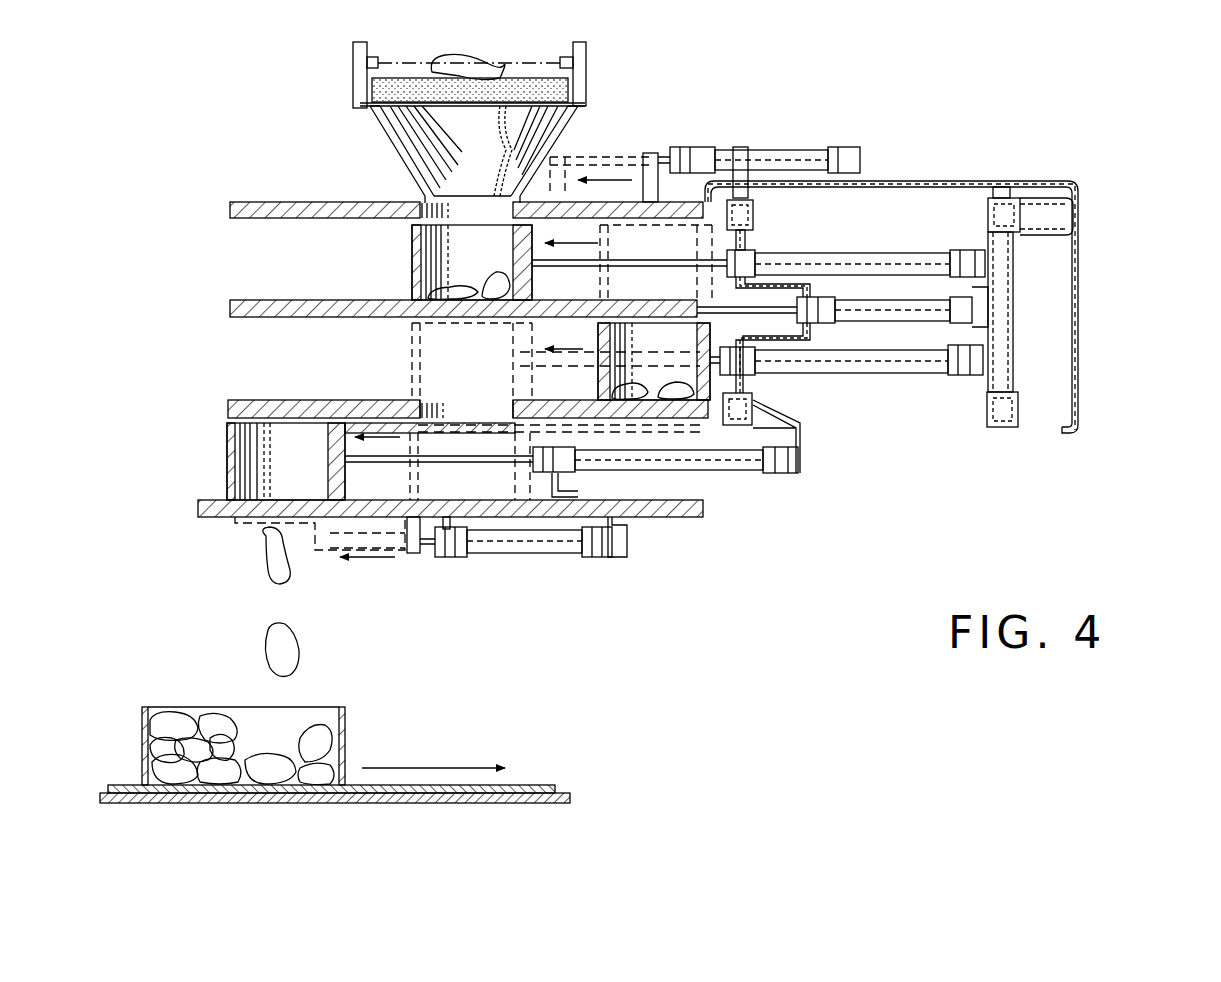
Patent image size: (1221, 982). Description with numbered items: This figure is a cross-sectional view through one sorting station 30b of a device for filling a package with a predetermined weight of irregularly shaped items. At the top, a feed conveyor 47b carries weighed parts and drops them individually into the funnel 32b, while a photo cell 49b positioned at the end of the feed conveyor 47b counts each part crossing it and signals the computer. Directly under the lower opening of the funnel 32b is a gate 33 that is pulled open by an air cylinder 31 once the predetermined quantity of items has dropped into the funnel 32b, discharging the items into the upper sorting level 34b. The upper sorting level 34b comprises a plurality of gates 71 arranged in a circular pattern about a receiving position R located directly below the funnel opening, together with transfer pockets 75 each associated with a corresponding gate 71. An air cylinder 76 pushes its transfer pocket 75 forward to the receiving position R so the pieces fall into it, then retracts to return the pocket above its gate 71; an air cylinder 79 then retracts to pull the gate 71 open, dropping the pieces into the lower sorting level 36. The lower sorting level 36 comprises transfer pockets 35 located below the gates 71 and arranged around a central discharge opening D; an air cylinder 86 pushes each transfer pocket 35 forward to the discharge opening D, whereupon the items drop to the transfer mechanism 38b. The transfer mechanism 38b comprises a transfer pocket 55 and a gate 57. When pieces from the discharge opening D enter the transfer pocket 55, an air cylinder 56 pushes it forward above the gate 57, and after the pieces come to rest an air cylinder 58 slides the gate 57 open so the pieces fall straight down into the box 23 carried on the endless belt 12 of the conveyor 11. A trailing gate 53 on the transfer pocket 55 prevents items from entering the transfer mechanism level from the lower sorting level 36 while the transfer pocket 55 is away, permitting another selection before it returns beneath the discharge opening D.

The conveyor 11 is at (540, 803).
The endless belt 12 is at (540, 785).
The box 23 is at (345, 735).
The sorting station 30b is at (656, 558).
The air cylinder 31 is at (788, 155).
The funnel 32b is at (402, 156).
The gate 33 is at (612, 188).
The upper sorting level 34b is at (300, 270).
The transfer pocket 35 is at (598, 380).
The lower sorting level 36 is at (300, 372).
The transfer mechanism 38b is at (212, 429).
The feed conveyor 47b is at (560, 85).
The photo cell 49b is at (353, 58).
The trailing gate 53 is at (462, 418).
The transfer pocket 55 is at (228, 472).
The air cylinder 56 is at (705, 462).
The gate 57 is at (372, 518).
The air cylinder 58 is at (522, 553).
The gate 71 is at (625, 300).
The transfer pocket 75 is at (414, 272).
The air cylinder 76 is at (850, 250).
The air cylinder 79 is at (910, 308).
The air cylinder 86 is at (883, 366).
The receiving position R is at (436, 240).
The discharge opening D is at (424, 403).